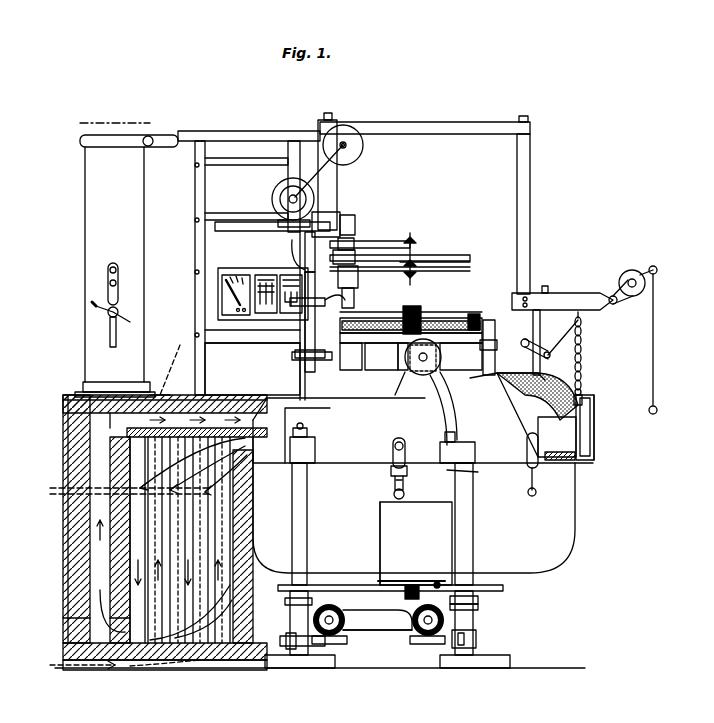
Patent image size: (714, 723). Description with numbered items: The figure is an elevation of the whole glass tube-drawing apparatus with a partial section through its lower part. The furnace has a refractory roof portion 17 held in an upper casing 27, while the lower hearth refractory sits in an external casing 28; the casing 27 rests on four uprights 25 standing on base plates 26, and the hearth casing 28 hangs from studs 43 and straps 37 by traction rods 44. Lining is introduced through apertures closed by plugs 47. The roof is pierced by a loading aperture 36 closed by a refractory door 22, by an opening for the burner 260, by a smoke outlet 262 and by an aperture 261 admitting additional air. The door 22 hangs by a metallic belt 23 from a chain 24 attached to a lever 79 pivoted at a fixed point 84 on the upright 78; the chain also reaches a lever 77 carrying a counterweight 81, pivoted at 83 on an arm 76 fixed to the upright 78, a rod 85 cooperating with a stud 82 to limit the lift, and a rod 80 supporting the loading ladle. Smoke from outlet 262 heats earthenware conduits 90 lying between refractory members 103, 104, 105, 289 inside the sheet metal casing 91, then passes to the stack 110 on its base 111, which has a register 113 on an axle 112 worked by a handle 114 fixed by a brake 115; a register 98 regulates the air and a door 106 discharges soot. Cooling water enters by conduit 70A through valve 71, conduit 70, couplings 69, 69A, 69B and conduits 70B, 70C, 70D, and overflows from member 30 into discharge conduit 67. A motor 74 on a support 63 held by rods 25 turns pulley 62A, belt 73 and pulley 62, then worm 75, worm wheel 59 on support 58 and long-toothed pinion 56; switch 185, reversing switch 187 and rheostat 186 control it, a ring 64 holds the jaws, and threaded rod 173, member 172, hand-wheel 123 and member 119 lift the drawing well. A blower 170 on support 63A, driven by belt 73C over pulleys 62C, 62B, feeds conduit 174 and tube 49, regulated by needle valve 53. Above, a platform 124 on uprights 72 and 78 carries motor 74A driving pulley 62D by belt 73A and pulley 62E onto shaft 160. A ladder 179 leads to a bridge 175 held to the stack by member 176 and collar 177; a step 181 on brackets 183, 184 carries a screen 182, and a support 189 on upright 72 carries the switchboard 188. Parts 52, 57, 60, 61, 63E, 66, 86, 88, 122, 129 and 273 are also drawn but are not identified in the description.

The refractory roof portion 17 is at (552, 420).
The door 22 is at (590, 450).
The metallic belt 23 is at (590, 427).
The chain 24 is at (582, 385).
The uprights 25 is at (307, 515).
The base plates 26 is at (280, 668).
The external envelope or casing 27 is at (275, 398).
The external recipient or casing 28 is at (560, 560).
The member 30 is at (483, 343).
The loading aperture 36 is at (545, 458).
The straps 37 is at (393, 450).
The pins or studs 43 is at (396, 438).
The traction rods 44 is at (396, 482).
The covers or plugs 47 is at (490, 346).
The threaded tube 49 is at (410, 585).
The pin 52 is at (435, 583).
The discharging needle valve 53 is at (395, 580).
The long-toothed pinion 56 is at (412, 310).
The bracket 57 is at (400, 372).
The support 58 is at (443, 352).
The worm wheel 59 is at (398, 380).
The disc 60 is at (425, 374).
The bolt 61 is at (445, 435).
The pulley 62 is at (452, 318).
The pulley 62A is at (440, 645).
The pulley 62B is at (428, 636).
The pulley 62C is at (333, 614).
The pulley 62D is at (346, 125).
The pulley 62E is at (280, 190).
The support 63 is at (476, 636).
The support 63A is at (330, 645).
The bearing bracket 63E is at (341, 218).
The ring 64 is at (413, 249).
The block 66 is at (350, 370).
The discharge conduit 67 is at (310, 372).
The pivoted coupling 69 is at (305, 268).
The pivoted coupling 69A is at (357, 275).
The pivoted coupling 69B is at (350, 306).
The conduit 70 is at (226, 318).
The conduit 70A is at (300, 345).
The conduit 70B is at (355, 258).
The conduit 70C is at (354, 294).
The conduit 70D is at (381, 356).
The regulating cock or valve 71 is at (292, 378).
The upright 72 is at (338, 186).
The belt 73 is at (480, 473).
The belt 73A is at (292, 197).
The belt 73C is at (395, 614).
The electric motor 74 is at (478, 607).
The motor 74A is at (278, 205).
The worm 75 is at (450, 405).
The arm 76 is at (565, 300).
The lever 77 is at (638, 272).
The upright 78 is at (528, 174).
The lever 79 is at (582, 340).
The rod 80 is at (654, 345).
The counterweight 81 is at (650, 275).
The stud 82 is at (492, 378).
The pivot 83 is at (612, 295).
The fixed pivot point 84 is at (535, 348).
The rod 85 is at (545, 286).
The chain end 86 is at (582, 368).
The link 88 is at (580, 345).
The earthenware conduits 90 is at (52, 491).
The sheet metal casing 91 is at (63, 432).
The register 98 is at (63, 652).
The refractory member 103 is at (190, 395).
The refractory member 104 is at (150, 430).
The refractory member 105 is at (130, 645).
The door 106 is at (75, 632).
The stack 110 is at (85, 236).
The base 111 is at (100, 386).
The axle 112 is at (108, 314).
The register 113 is at (95, 304).
The handle 114 is at (110, 340).
The brake 115 is at (108, 272).
The member 119 is at (300, 231).
The bar 122 is at (370, 235).
The hand-wheel 123 is at (354, 244).
The platform 124 is at (437, 120).
The block 129 is at (478, 312).
The shaft 160 is at (346, 145).
The blower 170 is at (325, 641).
The member 172 is at (420, 269).
The screwthreaded rod 173 is at (400, 258).
The conduit 174 is at (378, 633).
The bridge 175 is at (250, 126).
The member 176 is at (158, 138).
The collar 177 is at (92, 141).
The ladder 179 is at (198, 206).
The step 181 is at (330, 585).
The screen 182 is at (385, 542).
The bracket 183 is at (290, 600).
The bracket 184 is at (476, 597).
The switch 185 is at (295, 356).
The regulating rheostat 186 is at (222, 296).
The controlling and reversing switch 187 is at (228, 340).
The switchboard 188 is at (240, 276).
The support 189 is at (300, 273).
The burner 260 is at (305, 432).
The additional air aperture 261 is at (107, 670).
The smoke outlet 262 is at (256, 470).
The rod 273 is at (455, 263).
The refractory member 289 is at (75, 452).